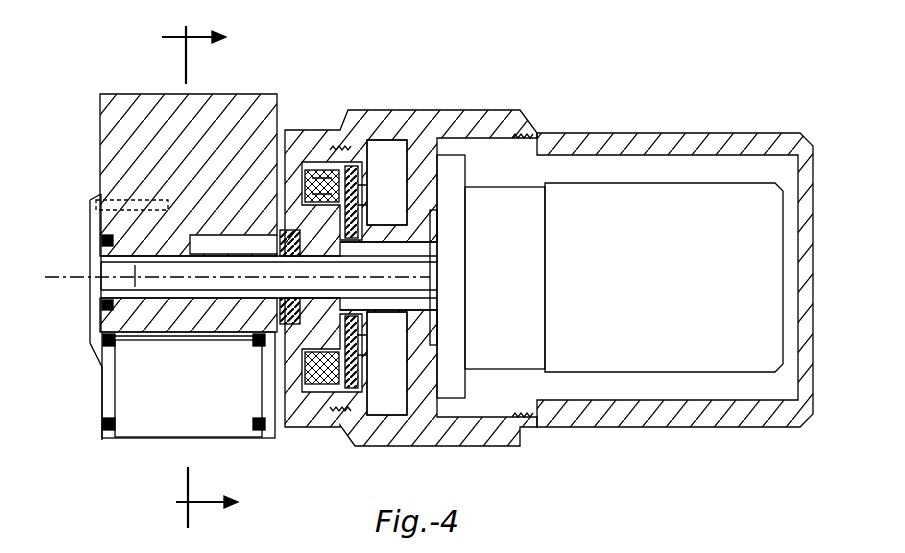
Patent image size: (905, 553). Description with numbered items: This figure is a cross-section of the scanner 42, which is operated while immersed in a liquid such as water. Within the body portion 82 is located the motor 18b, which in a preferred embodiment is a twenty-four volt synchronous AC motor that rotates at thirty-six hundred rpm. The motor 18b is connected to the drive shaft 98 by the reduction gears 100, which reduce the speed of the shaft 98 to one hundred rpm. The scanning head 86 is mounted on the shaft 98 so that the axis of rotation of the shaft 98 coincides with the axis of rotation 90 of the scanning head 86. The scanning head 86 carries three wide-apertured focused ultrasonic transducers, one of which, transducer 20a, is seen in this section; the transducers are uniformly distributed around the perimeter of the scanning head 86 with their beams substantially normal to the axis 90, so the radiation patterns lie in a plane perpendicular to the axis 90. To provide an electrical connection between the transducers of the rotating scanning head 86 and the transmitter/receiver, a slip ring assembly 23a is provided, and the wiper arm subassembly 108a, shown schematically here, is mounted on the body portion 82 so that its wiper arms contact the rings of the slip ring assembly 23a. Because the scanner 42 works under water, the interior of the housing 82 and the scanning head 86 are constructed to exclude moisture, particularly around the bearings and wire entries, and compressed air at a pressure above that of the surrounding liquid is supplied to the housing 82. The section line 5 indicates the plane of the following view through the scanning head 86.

The section line 5- 5 is at (203, 277).
The scanning head 86 is at (264, 94).
The axis of rotation 90 is at (50, 272).
The drive shaft 98 is at (104, 283).
The scanner 42 is at (466, 78).
The slip ring assembly 23a is at (322, 137).
The wiper arm subassembly 108a is at (380, 140).
The body portion 82 is at (600, 133).
The reduction gears 100 is at (487, 276).
The motor 18b is at (664, 277).
The focused ultrasonic transducer 20a is at (166, 440).